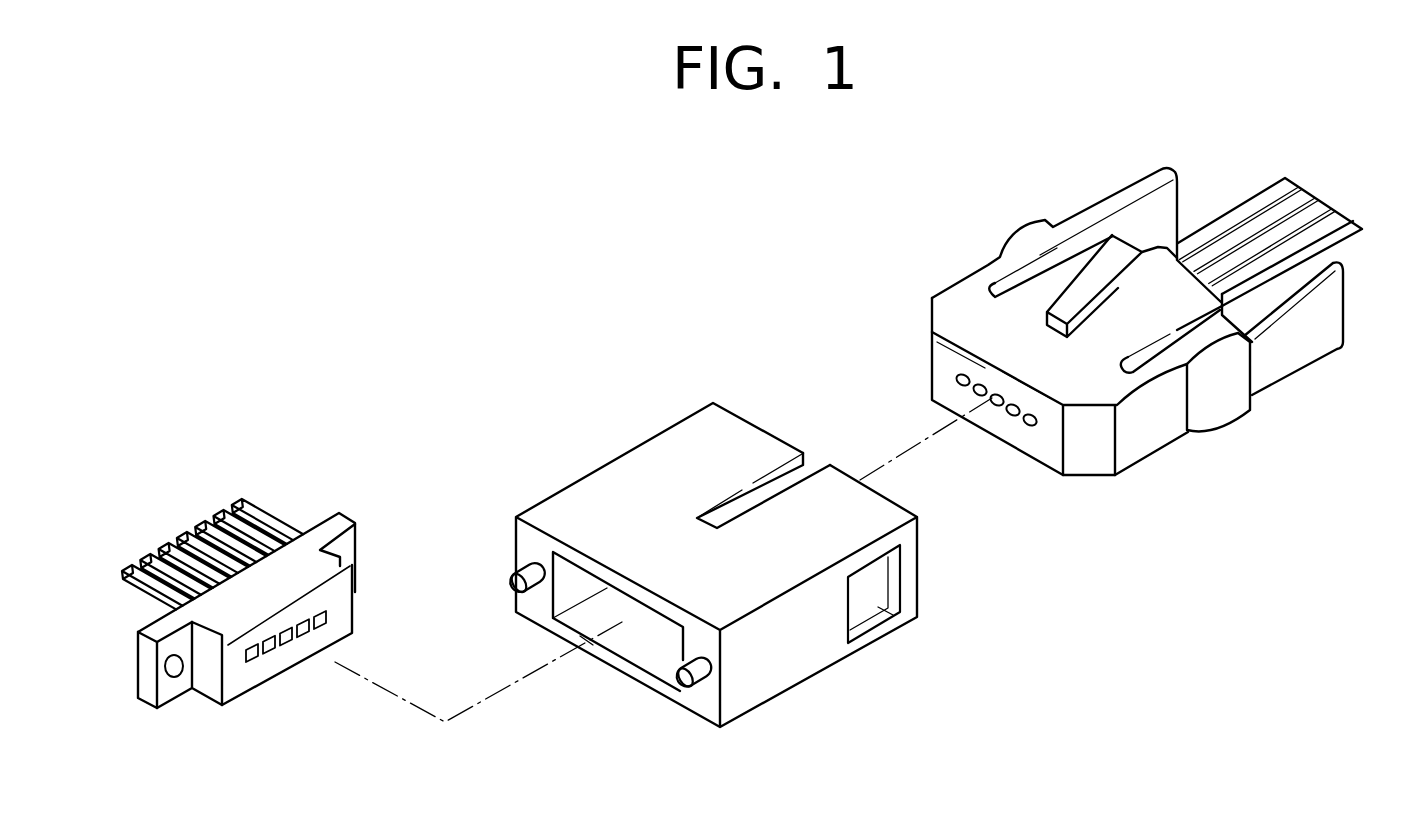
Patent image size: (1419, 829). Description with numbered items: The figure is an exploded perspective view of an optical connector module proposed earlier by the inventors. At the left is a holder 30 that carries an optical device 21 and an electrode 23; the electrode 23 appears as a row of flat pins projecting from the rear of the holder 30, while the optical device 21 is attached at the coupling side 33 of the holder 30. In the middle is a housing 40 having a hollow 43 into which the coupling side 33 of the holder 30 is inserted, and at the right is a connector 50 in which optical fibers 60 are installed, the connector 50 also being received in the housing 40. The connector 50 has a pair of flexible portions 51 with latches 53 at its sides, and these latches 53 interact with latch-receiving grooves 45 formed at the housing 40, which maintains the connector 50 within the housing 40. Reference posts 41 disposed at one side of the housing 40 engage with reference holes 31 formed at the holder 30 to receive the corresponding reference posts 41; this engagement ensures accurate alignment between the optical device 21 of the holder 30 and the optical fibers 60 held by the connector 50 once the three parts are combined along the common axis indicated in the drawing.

The optical device 21 is at (255, 658).
The electrode 23 is at (267, 518).
The holder 30 is at (135, 710).
The reference holes 31 is at (178, 672).
The coupling side 33 is at (205, 703).
The housing 40 is at (823, 697).
The reference posts 41 is at (688, 680).
The hollow 43 is at (652, 658).
The latch-receiving grooves 45 is at (897, 620).
The connector 50 is at (1177, 475).
The flexible portions 51 is at (1345, 305).
The latches 53 is at (1238, 403).
The optical fibers 60 is at (1245, 188).